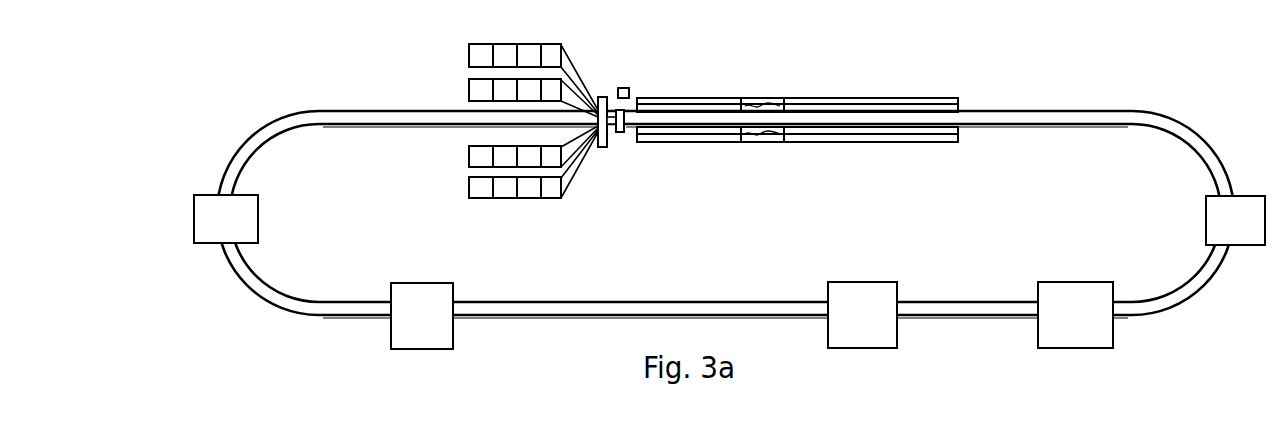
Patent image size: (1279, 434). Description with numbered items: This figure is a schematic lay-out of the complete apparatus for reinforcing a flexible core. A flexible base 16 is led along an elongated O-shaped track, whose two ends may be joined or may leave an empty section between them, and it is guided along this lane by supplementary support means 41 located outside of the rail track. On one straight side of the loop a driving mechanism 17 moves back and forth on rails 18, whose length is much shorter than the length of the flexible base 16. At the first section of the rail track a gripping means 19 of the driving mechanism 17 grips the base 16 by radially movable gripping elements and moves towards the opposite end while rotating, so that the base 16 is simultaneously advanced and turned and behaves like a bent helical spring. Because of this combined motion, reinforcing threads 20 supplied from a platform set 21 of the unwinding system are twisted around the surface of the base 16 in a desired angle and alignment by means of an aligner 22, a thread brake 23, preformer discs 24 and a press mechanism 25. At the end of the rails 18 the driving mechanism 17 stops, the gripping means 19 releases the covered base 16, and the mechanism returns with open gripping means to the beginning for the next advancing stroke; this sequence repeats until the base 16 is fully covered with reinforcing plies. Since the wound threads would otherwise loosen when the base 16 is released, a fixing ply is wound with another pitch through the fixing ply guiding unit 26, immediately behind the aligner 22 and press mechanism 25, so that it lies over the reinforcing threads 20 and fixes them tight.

The flexible base 16 is at (1091, 121).
The supplementary support means 41 is at (241, 219).
The platform set 21 is at (481, 57).
The reinforcing threads 20 is at (580, 174).
The aligner 22 is at (620, 86).
The thread brake 23 is at (623, 97).
The preformer discs 24 is at (648, 47).
The press mechanism 25 is at (624, 130).
The fixing ply guiding unit 26 is at (630, 88).
The driving mechanism 17 is at (752, 98).
The gripping means 19 is at (780, 98).
The rails 18 is at (935, 98).